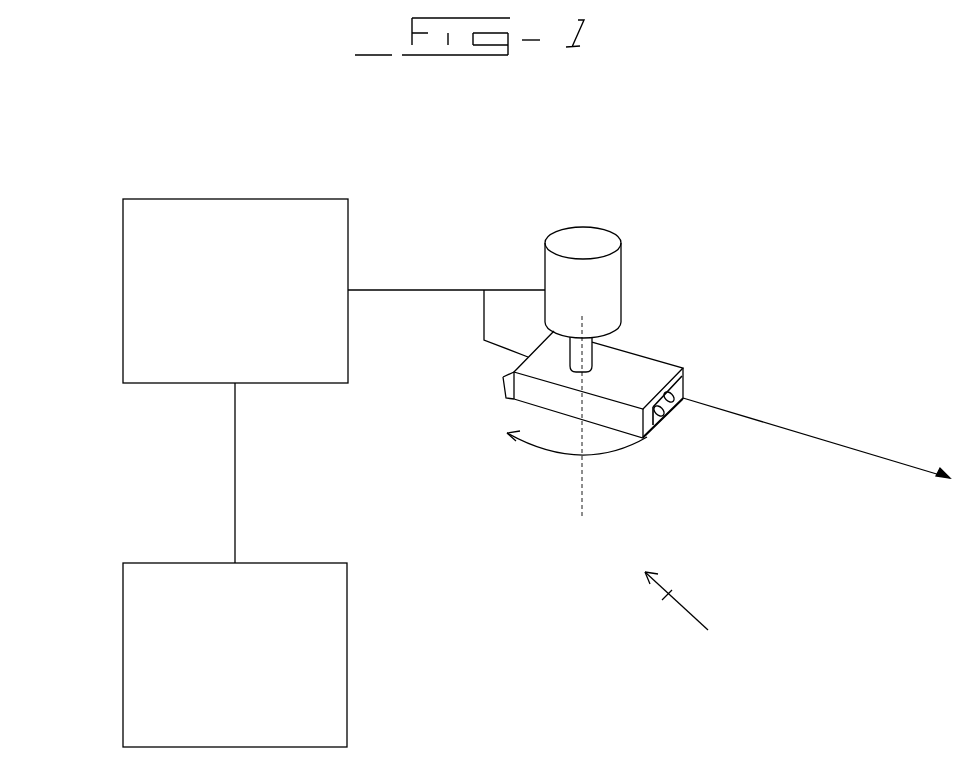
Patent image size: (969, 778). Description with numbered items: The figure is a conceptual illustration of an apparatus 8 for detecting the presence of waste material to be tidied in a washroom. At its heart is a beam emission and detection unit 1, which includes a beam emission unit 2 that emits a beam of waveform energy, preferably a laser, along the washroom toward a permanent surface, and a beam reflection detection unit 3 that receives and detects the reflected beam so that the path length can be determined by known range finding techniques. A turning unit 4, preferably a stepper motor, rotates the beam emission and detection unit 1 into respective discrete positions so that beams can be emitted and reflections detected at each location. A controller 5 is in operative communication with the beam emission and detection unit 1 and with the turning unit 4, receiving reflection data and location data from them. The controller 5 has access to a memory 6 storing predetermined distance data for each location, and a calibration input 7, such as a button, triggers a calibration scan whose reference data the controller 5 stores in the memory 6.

The beam emission and detection unit 1 is at (684, 335).
The beam emission unit 2 is at (686, 370).
The beam reflection detection unit 3 is at (667, 415).
The turning unit 4 is at (566, 235).
The controller 5 is at (232, 199).
The memory 6 is at (347, 697).
The calibration input 7 is at (500, 387).
The apparatus 8 is at (687, 613).